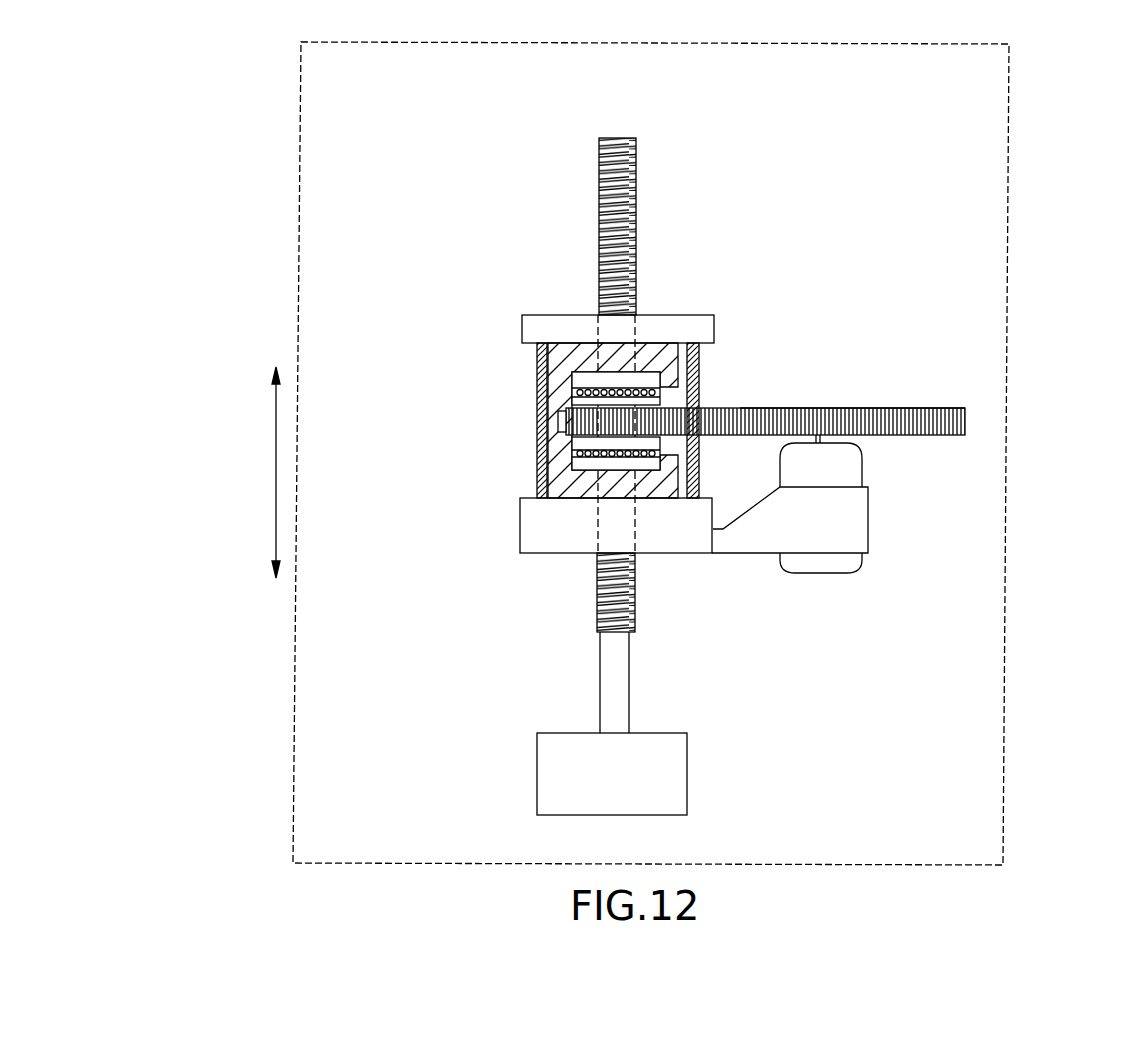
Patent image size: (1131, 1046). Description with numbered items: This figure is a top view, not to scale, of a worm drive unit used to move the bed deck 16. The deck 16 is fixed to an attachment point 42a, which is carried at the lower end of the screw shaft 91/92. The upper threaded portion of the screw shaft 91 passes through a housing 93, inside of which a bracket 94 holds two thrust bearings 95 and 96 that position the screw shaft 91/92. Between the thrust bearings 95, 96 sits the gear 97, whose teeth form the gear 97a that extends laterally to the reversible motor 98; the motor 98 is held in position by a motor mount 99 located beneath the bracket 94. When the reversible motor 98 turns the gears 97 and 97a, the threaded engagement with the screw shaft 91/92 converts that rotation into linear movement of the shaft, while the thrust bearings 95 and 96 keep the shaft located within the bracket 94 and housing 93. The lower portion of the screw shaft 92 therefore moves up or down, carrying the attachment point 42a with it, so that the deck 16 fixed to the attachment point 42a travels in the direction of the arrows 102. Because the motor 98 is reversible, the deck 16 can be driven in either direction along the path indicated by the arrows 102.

The deck 16 is at (980, 587).
The attachment point 42a is at (672, 762).
The screw shaft 91 is at (614, 246).
The screw shaft 92 is at (608, 712).
The housing 93 is at (545, 325).
The bracket 94 is at (545, 357).
The thrust bearing 95 is at (648, 387).
The thrust bearing 96 is at (575, 462).
The gear 97 is at (583, 423).
The gear 97a is at (860, 425).
The reversible motor 98 is at (838, 470).
The motor mount 99 is at (562, 538).
The arrows 102 is at (275, 473).